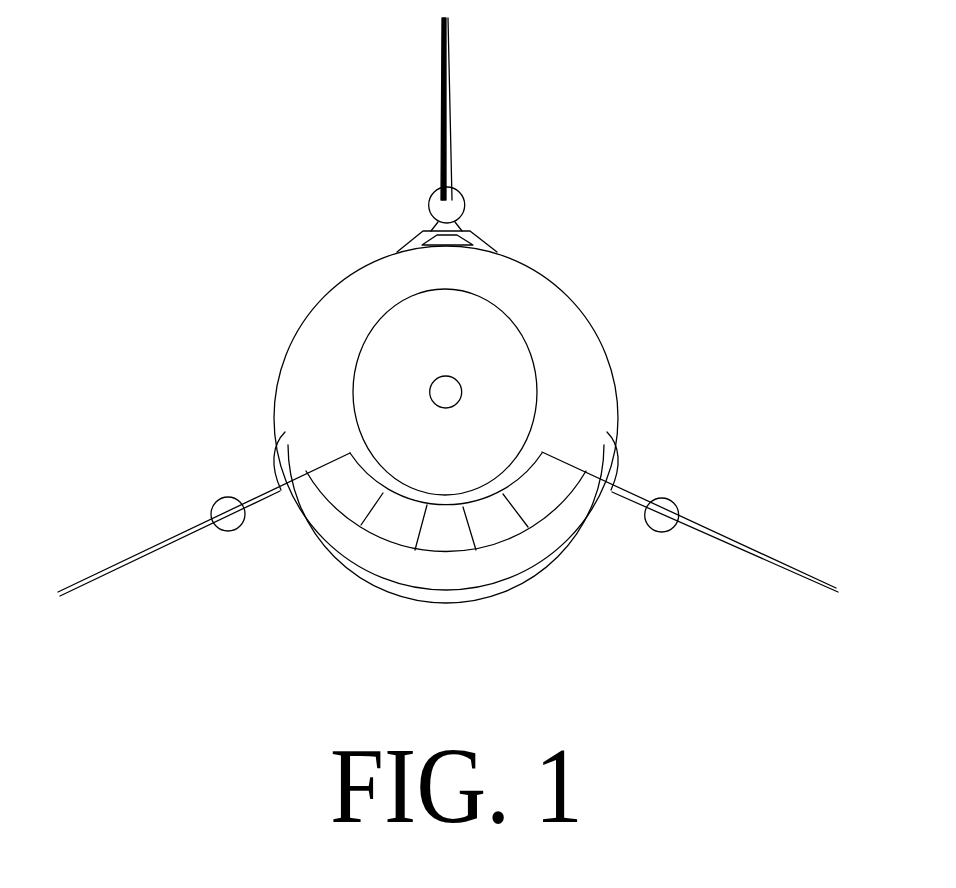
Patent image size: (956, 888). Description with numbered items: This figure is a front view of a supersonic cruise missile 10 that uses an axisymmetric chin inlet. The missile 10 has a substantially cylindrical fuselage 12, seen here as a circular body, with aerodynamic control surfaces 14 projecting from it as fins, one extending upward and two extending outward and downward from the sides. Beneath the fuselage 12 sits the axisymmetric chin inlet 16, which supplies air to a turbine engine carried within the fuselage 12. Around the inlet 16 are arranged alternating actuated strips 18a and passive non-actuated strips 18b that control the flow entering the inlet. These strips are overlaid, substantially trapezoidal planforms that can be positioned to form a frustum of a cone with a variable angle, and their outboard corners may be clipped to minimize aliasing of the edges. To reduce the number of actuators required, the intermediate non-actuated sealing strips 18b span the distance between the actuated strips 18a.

The missile 10 is at (628, 300).
The fuselage 12 is at (597, 385).
The aerodynamic control surfaces 14 is at (451, 152).
The axisymmetric chin inlet 16 is at (437, 588).
The actuated strips 18a is at (362, 493).
The passive non-actuated sealing strips 18b is at (338, 477).